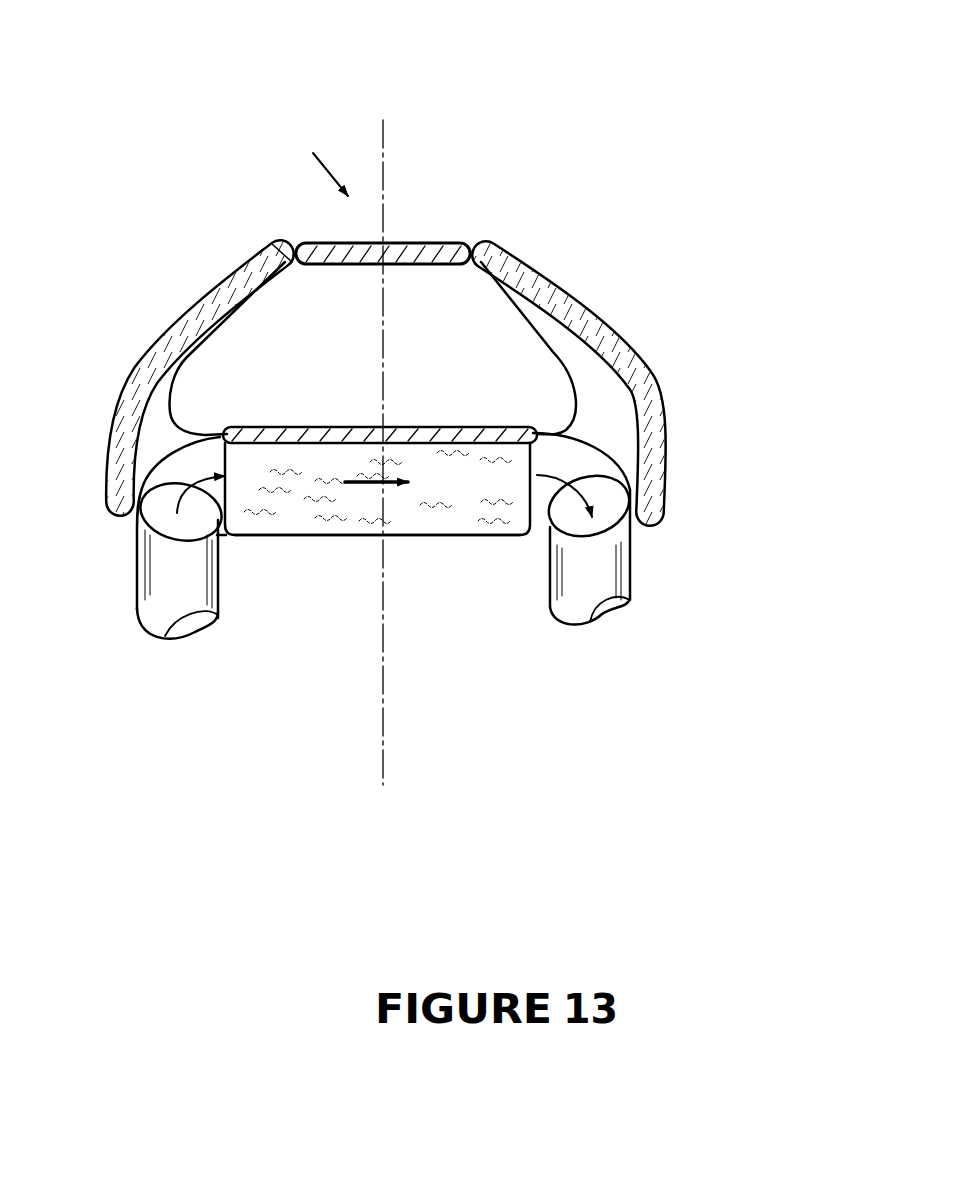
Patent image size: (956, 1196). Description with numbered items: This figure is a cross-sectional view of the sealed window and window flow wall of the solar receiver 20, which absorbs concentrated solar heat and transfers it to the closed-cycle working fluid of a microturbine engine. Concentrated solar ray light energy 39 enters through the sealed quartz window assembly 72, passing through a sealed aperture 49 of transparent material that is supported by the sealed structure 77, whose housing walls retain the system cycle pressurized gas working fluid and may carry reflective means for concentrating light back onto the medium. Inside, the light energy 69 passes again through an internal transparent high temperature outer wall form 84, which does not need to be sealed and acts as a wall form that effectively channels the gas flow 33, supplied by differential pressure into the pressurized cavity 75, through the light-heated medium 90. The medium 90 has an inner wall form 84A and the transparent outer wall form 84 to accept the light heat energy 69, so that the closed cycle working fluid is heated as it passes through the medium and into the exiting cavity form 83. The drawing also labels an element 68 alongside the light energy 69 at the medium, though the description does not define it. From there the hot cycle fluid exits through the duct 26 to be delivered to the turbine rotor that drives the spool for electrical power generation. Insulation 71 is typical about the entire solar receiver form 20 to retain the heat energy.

The solar receiver 20 is at (470, 222).
The duct 26 is at (600, 603).
The gas flow 33 is at (175, 646).
The concentrated solar ray 39 is at (437, 200).
The aperture 49 is at (456, 240).
The support plate 68 is at (317, 393).
The light energy 69 is at (380, 403).
The insulation 71 is at (187, 357).
The sealed quartz window assembly 72 is at (327, 250).
The cavity 75 is at (250, 292).
The sealed structure 77 is at (287, 327).
The exiting cavity form 83 is at (134, 500).
The transparent outer wall form 84 is at (433, 432).
The inner wall form 84A is at (360, 536).
The medium 90 is at (442, 480).